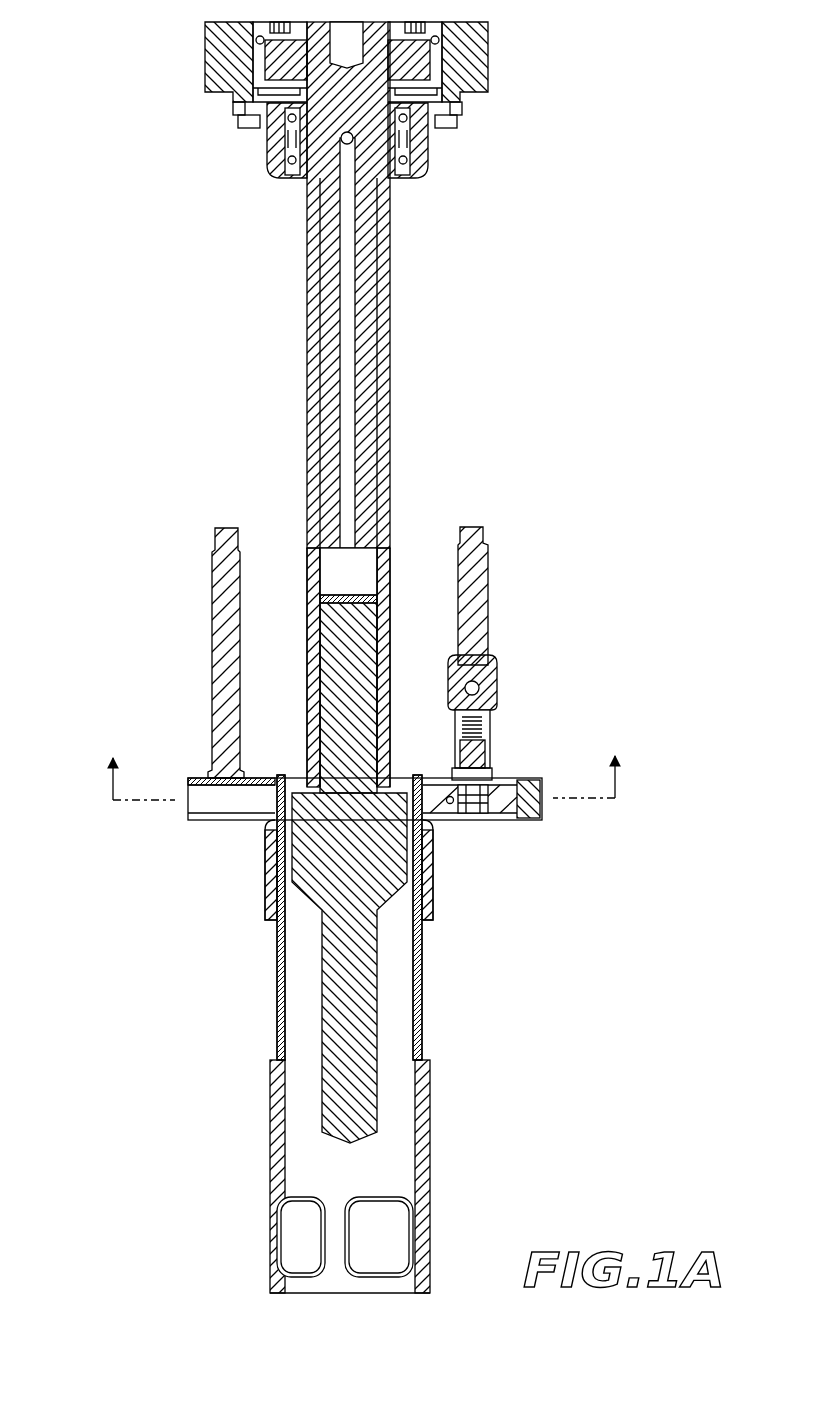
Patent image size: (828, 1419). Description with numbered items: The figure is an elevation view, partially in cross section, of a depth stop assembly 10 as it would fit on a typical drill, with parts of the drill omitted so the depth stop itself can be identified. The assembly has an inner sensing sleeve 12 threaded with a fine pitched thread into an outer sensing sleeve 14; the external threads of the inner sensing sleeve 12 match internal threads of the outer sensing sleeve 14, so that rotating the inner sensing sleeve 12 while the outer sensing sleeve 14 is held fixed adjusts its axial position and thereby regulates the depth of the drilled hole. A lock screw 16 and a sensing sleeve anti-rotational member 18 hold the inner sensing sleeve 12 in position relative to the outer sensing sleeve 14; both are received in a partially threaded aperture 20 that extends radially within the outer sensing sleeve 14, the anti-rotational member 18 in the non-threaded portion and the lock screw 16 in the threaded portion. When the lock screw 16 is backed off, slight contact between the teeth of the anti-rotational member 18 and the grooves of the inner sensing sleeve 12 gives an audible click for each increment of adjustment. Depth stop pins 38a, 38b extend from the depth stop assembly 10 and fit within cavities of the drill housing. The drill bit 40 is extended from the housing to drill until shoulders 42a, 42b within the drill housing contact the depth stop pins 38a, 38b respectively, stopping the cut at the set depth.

The depth stop assembly 10 is at (129, 968).
The inner sensing sleeve 12 is at (430, 1177).
The outer sensing sleeve 14 is at (433, 895).
The lock screw 16 is at (535, 780).
The sensing sleeve anti-rotational member 18 is at (452, 803).
The partially threaded aperture 20 is at (500, 780).
The depth stop pin 38a is at (489, 570).
The depth stop pin 38b is at (209, 548).
The drill bit 40 is at (377, 1020).
The shoulder 42a is at (479, 103).
The shoulder 42b is at (215, 103).